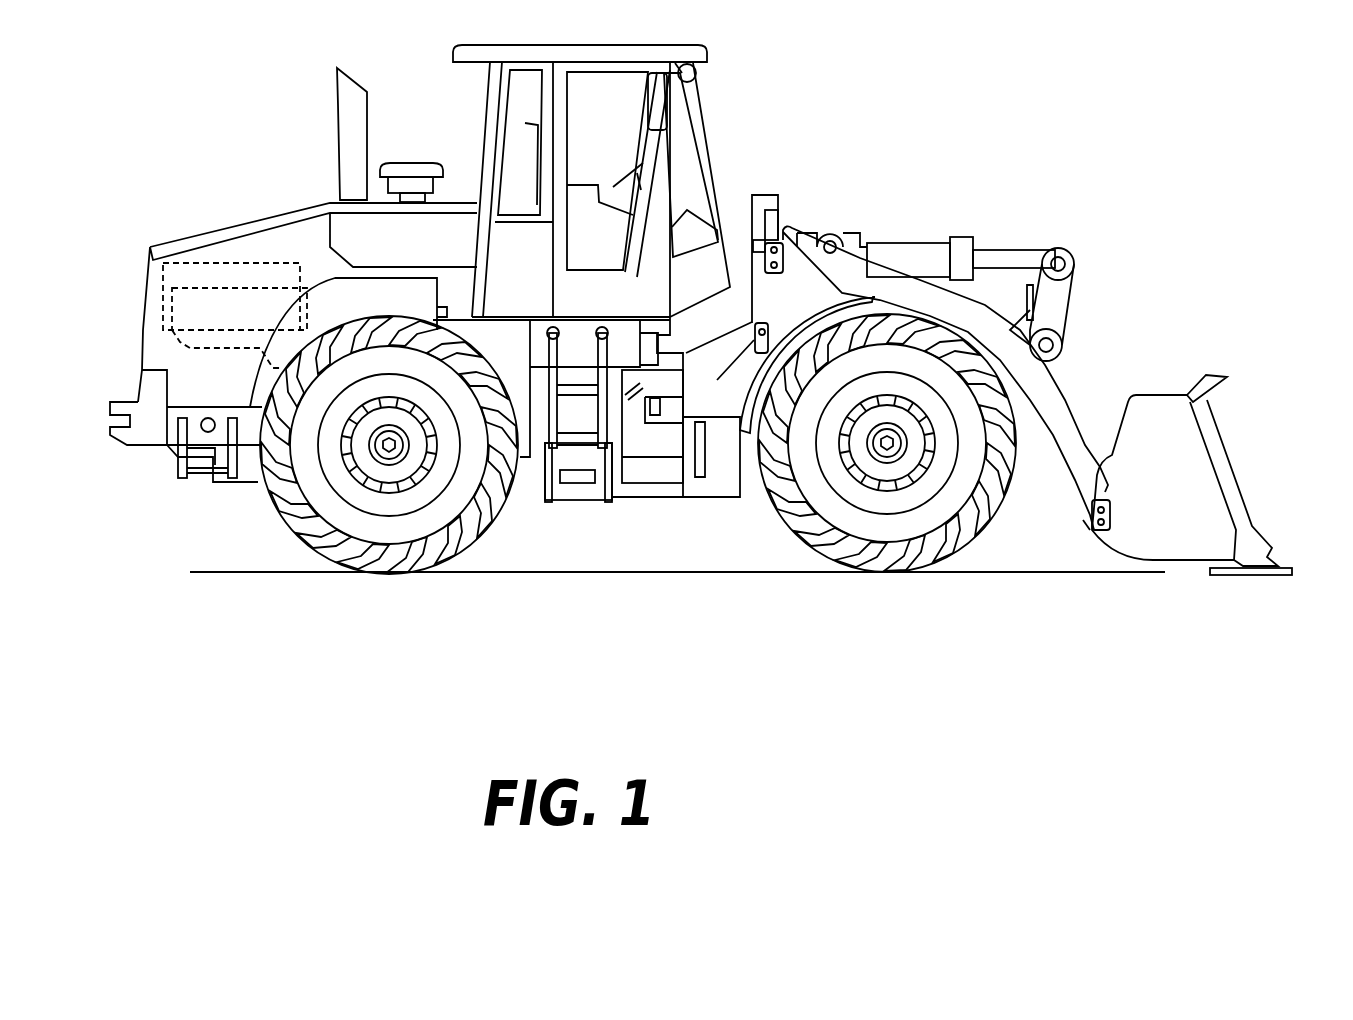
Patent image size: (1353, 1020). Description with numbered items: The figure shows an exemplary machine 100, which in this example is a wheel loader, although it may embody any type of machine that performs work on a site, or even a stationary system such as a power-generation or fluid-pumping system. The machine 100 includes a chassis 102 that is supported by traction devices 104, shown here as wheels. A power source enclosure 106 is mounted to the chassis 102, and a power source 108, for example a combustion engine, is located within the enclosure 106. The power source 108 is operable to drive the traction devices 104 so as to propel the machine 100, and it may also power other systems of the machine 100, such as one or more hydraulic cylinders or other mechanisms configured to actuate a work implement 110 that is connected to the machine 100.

The machine 100 is at (879, 119).
The chassis 102 is at (662, 498).
The traction devices 104 is at (990, 535).
The power source enclosure 106 is at (206, 232).
The power source 108 is at (228, 352).
The work implement 110 is at (1162, 417).